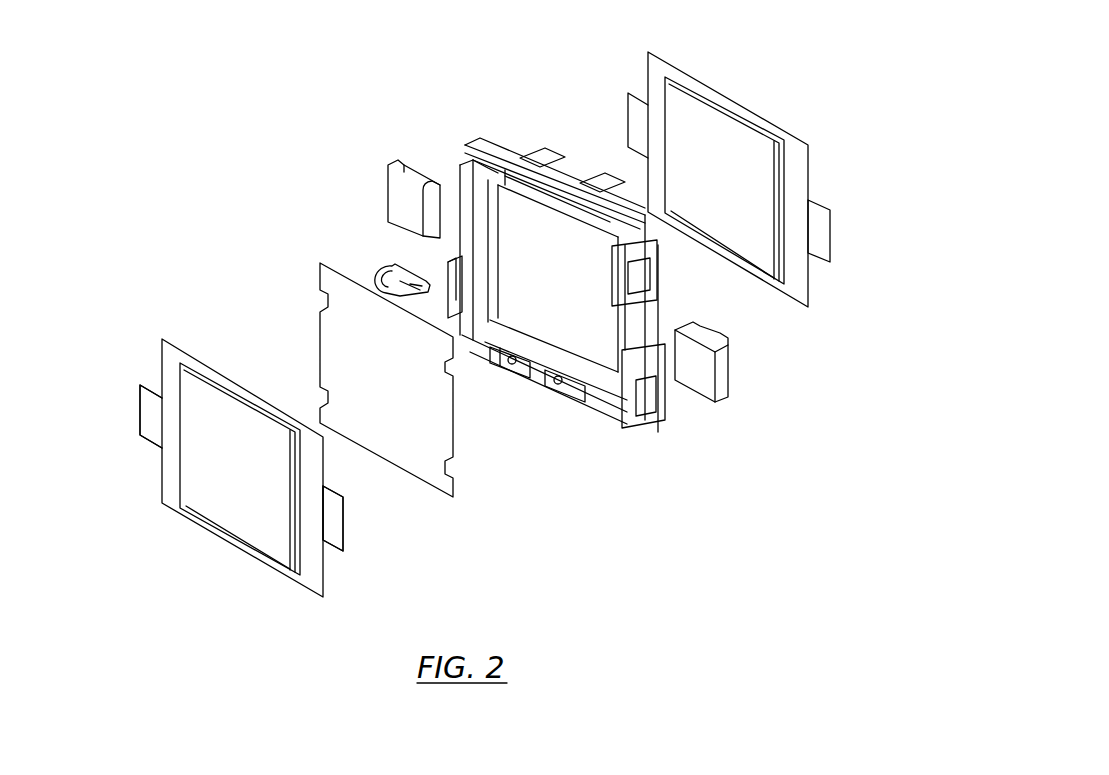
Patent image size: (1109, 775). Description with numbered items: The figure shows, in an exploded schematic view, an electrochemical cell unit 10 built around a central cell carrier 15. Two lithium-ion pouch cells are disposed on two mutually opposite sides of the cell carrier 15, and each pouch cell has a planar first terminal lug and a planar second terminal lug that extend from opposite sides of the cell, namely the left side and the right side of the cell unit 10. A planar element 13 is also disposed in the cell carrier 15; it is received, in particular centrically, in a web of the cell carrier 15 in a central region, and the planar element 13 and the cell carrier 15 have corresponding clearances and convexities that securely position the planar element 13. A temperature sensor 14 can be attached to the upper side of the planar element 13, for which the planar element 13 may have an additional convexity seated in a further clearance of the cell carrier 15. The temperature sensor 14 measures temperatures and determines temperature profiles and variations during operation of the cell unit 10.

The electrochemical cell unit 10 is at (272, 102).
The planar element 13 is at (438, 422).
The temperature sensor 14 is at (405, 262).
The cell carrier 15 is at (428, 78).